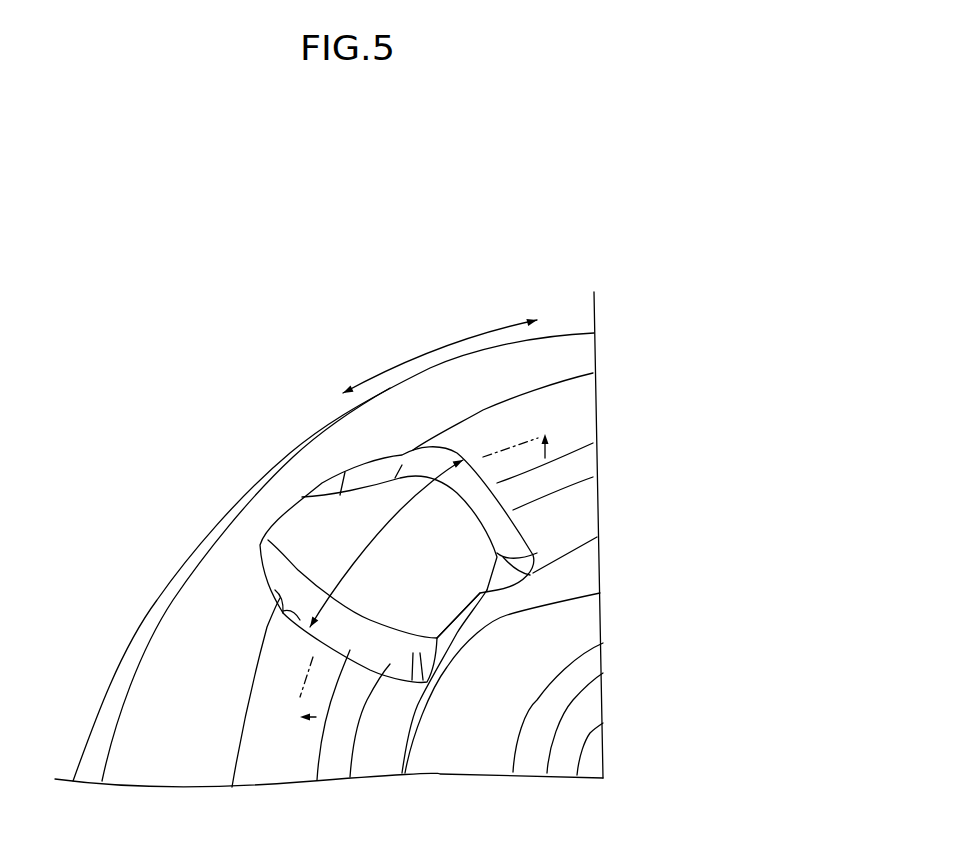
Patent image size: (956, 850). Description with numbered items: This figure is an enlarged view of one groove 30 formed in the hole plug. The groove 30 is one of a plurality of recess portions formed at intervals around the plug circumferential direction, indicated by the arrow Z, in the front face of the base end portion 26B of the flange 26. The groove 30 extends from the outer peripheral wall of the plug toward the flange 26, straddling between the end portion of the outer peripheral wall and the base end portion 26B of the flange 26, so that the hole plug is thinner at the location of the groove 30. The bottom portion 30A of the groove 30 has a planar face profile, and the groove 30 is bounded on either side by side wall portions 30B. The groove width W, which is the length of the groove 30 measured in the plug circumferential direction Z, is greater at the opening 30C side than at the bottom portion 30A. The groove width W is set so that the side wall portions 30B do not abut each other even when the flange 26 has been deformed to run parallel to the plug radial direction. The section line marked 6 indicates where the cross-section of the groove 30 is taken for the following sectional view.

The flange 26 is at (568, 333).
The base end portion 26B is at (563, 398).
The groove 30 is at (360, 557).
The bottom portion 30A is at (447, 593).
The side wall portion 30B is at (457, 503).
The opening 30C is at (283, 613).
The groove width W is at (382, 530).
The plug circumferential direction Z is at (443, 348).
The section line for FIG. 6 is at (430, 591).